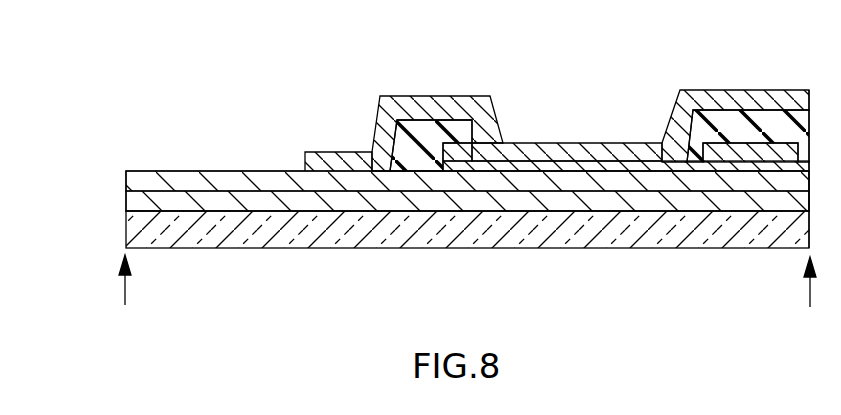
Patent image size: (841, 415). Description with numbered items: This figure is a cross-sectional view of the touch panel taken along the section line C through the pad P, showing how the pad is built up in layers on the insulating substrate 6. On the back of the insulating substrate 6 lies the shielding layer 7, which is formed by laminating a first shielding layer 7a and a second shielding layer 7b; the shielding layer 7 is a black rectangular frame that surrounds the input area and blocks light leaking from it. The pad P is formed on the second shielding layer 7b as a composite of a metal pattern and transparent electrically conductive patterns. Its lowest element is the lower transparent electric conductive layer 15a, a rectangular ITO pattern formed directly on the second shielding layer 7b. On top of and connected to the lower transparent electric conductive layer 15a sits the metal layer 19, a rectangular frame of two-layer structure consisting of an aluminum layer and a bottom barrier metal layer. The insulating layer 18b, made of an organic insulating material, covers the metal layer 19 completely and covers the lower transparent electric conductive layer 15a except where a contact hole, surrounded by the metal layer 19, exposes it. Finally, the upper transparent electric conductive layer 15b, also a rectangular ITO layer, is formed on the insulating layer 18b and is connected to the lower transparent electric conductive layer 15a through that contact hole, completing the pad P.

The insulating substrate 6 is at (334, 248).
The shielding layer 7 is at (429, 193).
The first shielding layer 7a is at (447, 204).
The second shielding layer 7b is at (126, 180).
The insulating layer 18b is at (428, 131).
The lower transparent electric conductive layer 15a is at (578, 143).
The upper transparent electric conductive layer 15b is at (638, 143).
The metal layer 19 is at (725, 122).
The pad P is at (730, 43).
The line C- C is at (467, 294).